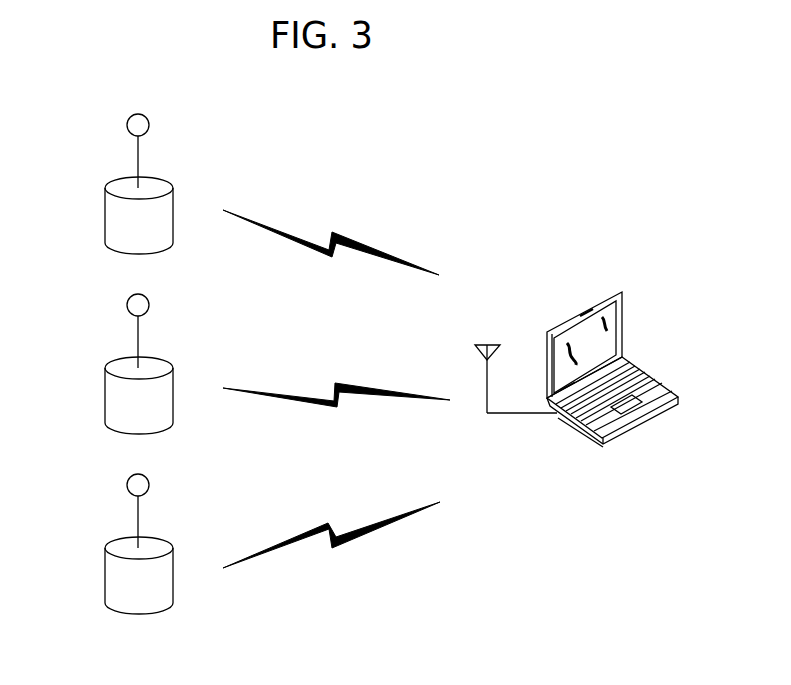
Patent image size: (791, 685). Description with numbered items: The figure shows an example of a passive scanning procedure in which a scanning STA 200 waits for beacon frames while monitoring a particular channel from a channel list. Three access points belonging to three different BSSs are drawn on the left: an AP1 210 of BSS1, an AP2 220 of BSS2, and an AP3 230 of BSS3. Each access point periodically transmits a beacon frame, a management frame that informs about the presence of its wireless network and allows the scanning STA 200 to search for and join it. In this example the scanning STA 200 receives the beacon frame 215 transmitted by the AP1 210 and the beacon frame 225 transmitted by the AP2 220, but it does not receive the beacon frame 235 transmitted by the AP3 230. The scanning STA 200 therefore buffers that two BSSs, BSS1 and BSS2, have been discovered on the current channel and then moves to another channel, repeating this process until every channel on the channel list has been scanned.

The AP1 210 is at (113, 180).
The AP2 220 is at (113, 360).
The AP3 230 is at (113, 540).
The beacon frame 215 is at (357, 168).
The beacon frame 225 is at (355, 348).
The beacon frame 235 is at (353, 580).
The scanning STA 200 is at (622, 433).